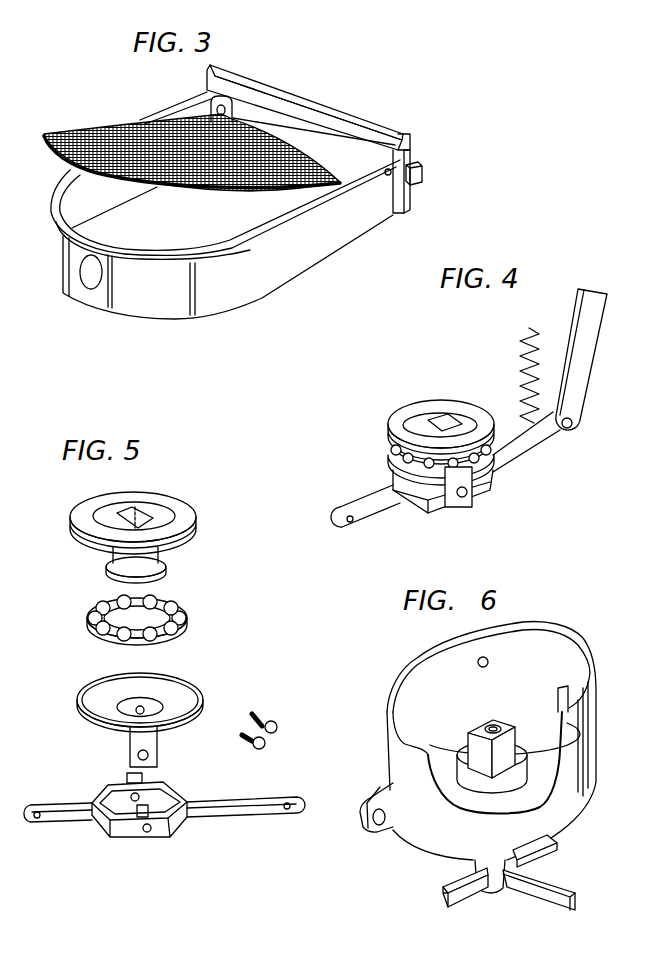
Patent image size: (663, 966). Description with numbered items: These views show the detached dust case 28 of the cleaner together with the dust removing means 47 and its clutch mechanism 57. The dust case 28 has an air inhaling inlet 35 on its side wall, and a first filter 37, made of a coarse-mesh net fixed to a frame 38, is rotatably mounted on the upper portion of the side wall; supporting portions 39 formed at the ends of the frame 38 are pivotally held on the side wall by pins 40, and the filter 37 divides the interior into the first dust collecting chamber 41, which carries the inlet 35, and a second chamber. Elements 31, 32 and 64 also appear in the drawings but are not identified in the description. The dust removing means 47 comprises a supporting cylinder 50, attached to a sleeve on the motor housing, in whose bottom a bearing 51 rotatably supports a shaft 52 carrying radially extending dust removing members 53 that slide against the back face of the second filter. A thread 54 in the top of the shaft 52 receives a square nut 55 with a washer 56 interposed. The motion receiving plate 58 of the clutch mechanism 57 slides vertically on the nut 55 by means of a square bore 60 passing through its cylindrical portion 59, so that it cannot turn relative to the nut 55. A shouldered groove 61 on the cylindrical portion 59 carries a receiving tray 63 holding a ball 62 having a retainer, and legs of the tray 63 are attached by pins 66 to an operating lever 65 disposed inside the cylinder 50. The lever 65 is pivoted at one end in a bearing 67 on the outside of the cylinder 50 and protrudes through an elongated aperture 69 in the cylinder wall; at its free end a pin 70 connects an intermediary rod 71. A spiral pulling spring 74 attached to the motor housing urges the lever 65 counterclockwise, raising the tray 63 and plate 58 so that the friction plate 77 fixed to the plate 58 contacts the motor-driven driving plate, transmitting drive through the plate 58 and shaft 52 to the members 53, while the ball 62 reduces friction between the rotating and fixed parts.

In FIG. 3, the dust case 28 is at (345, 229).
In FIG. 3, the frame bar 31 is at (322, 130).
In FIG. 3, the latch 32 is at (421, 175).
In FIG. 3, the air inhaling inlet 35 is at (90, 288).
In FIG. 3, the first filter 37 is at (105, 132).
In FIG. 3, the frame 38 is at (175, 121).
In FIG. 3, the supporting portions 39 is at (234, 103).
In FIG. 3, the pins 40 is at (398, 213).
In FIG. 3, the first dust collecting chamber 41 is at (247, 218).
In FIG. 6, the dust removing means 47 is at (397, 848).
In FIG. 6, the supporting cylinder 50 is at (390, 752).
In FIG. 6, the bearing 51 is at (467, 790).
In FIG. 6, the shaft 52 is at (493, 882).
In FIG. 6, the dust removing members 53 is at (533, 887).
In FIG. 6, the thread 54 is at (493, 725).
In FIG. 6, the square nut 55 is at (477, 752).
In FIG. 6, the washer 56 is at (520, 748).
In FIG. 4, the clutch mechanism 57 is at (543, 453).
In FIG. 4, the motion receiving plate 58 is at (410, 418).
In FIG. 5, the motion receiving plate 58 is at (103, 514).
In FIG. 5, the cylindrical portion 59 is at (192, 522).
In FIG. 4, the square bore 60 is at (445, 420).
In FIG. 5, the square bore 60 is at (148, 512).
In FIG. 5, the shouldered groove 61 is at (165, 552).
In FIG. 4, the ball having a retainer 62 is at (402, 465).
In FIG. 5, the ball having a retainer 62 is at (178, 610).
In FIG. 4, the receiving tray 63 is at (472, 468).
In FIG. 5, the receiving tray 63 is at (190, 682).
In FIG. 4, the bracket tab 64 is at (457, 508).
In FIG. 5, the bracket tab 64 is at (158, 750).
In FIG. 4, the operating lever 65 is at (370, 512).
In FIG. 5, the operating lever 65 is at (63, 808).
In FIG. 4, the pins 66 is at (472, 495).
In FIG. 5, the pins 66 is at (258, 724).
In FIG. 6, the bearing 67 is at (368, 798).
In FIG. 6, the elongated aperture 69 is at (563, 688).
In FIG. 4, the pin 70 is at (576, 423).
In FIG. 4, the intermediary rod 71 is at (588, 355).
In FIG. 4, the spiral pulling spring 74 is at (520, 343).
In FIG. 4, the friction plate 77 is at (426, 410).
In FIG. 5, the friction plate 77 is at (185, 512).